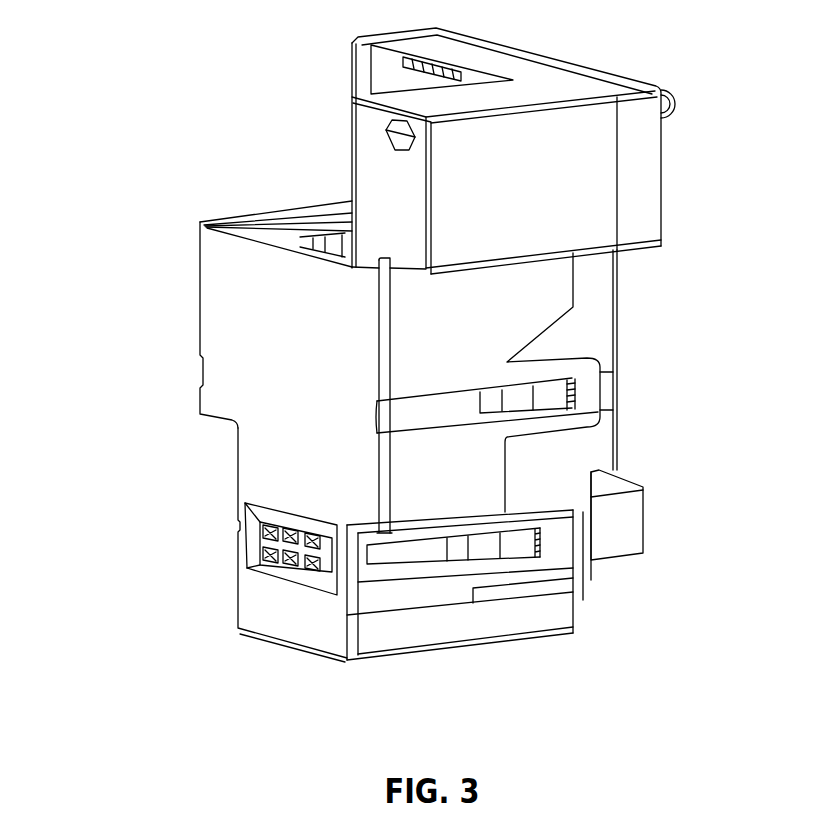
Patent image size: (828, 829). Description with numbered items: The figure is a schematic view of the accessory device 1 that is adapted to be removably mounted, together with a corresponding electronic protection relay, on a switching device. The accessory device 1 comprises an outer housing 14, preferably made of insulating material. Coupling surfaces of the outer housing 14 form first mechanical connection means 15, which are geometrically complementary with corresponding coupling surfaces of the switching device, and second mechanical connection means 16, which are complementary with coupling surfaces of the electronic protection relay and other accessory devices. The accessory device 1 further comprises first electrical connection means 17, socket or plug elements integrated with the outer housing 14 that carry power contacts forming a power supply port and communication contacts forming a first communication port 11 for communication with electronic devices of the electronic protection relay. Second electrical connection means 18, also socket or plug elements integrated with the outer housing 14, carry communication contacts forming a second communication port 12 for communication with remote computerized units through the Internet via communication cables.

The accessory device 1 is at (158, 130).
The first communication port 11 is at (262, 528).
The second communication port 12 is at (333, 248).
The outer housing 14 is at (225, 295).
The first mechanical connection means 15 is at (428, 617).
The second mechanical connection means 16 is at (398, 153).
The first electrical connection means 17 is at (225, 520).
The second electrical connection means 18 is at (337, 190).